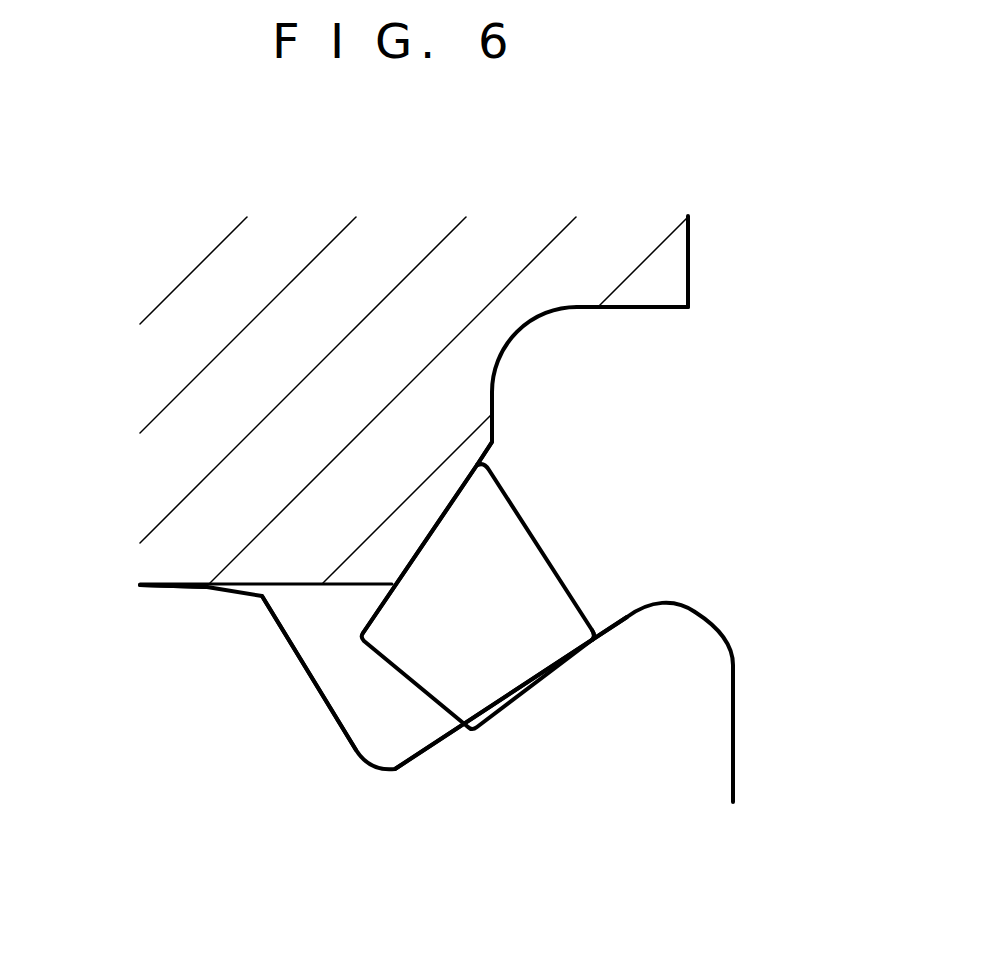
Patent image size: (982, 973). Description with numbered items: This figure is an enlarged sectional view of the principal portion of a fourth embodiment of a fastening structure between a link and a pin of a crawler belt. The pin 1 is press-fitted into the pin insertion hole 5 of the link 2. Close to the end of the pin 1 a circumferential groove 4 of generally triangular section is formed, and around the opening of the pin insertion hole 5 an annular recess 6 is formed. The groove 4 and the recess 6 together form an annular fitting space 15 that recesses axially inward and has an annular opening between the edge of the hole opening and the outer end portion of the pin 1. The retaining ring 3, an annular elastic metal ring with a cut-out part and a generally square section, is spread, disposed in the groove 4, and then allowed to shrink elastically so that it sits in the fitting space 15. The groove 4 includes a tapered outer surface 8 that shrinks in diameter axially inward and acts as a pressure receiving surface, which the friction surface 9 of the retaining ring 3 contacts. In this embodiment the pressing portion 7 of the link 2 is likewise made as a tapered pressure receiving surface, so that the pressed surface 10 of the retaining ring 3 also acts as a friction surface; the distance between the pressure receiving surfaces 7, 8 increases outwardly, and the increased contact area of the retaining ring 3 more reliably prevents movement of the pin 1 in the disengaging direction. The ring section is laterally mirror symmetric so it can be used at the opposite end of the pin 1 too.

The pin 1 is at (157, 788).
The link 2 is at (152, 282).
The retaining ring 3 is at (550, 597).
The circumferential groove 4 is at (330, 719).
The pin insertion hole 5 is at (163, 585).
The annular recess 6 is at (628, 308).
The pressing portion 7 is at (408, 568).
The tapered outer surface 8 is at (548, 668).
The friction surface 9 is at (515, 700).
The pressed surface 10 is at (448, 505).
The annular fitting space 15 is at (703, 483).